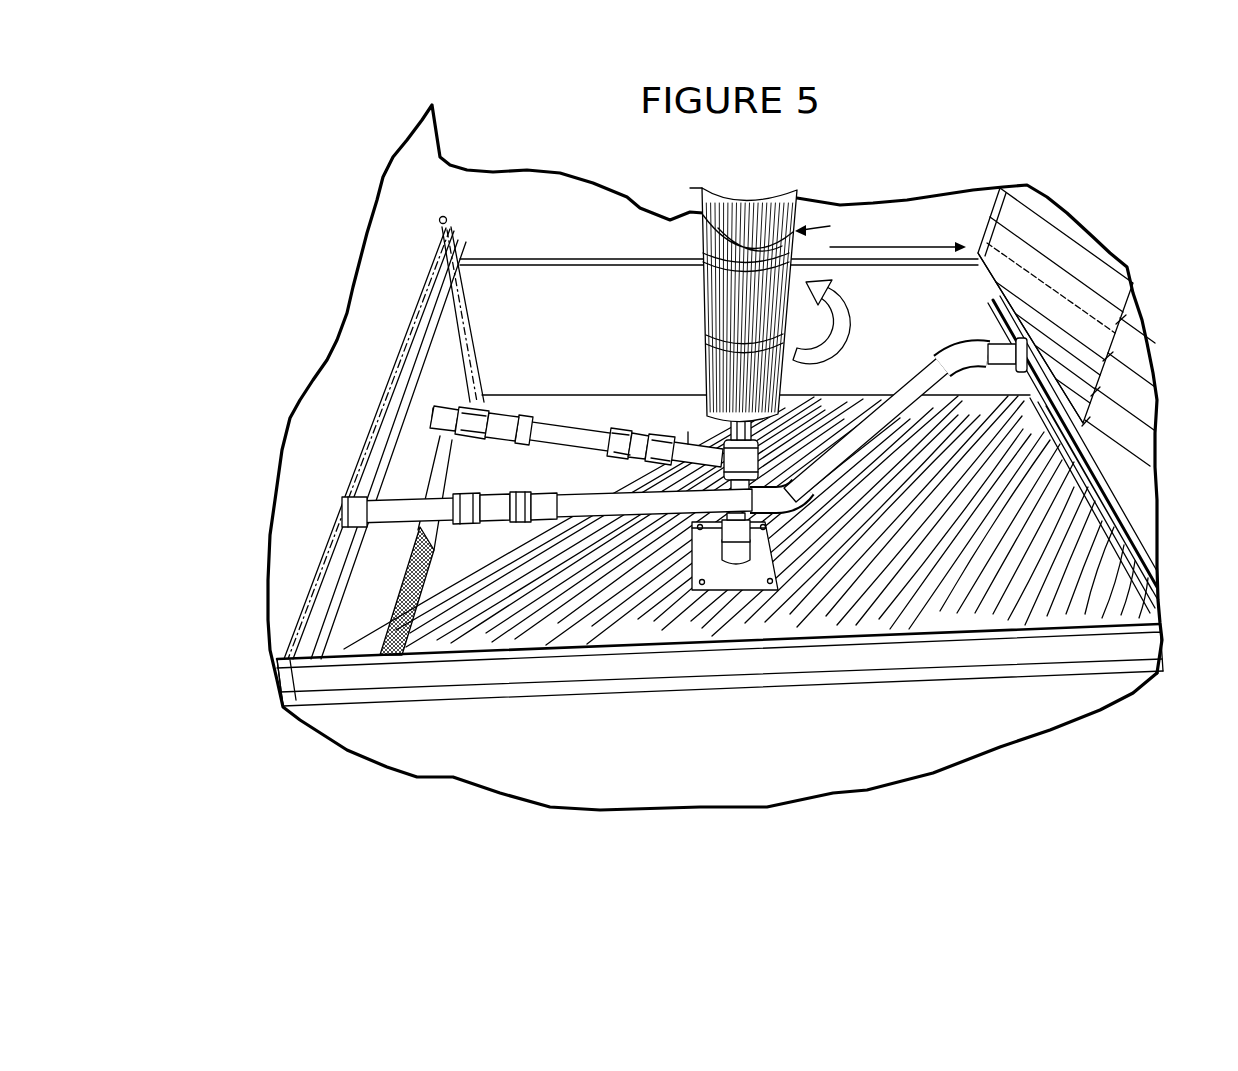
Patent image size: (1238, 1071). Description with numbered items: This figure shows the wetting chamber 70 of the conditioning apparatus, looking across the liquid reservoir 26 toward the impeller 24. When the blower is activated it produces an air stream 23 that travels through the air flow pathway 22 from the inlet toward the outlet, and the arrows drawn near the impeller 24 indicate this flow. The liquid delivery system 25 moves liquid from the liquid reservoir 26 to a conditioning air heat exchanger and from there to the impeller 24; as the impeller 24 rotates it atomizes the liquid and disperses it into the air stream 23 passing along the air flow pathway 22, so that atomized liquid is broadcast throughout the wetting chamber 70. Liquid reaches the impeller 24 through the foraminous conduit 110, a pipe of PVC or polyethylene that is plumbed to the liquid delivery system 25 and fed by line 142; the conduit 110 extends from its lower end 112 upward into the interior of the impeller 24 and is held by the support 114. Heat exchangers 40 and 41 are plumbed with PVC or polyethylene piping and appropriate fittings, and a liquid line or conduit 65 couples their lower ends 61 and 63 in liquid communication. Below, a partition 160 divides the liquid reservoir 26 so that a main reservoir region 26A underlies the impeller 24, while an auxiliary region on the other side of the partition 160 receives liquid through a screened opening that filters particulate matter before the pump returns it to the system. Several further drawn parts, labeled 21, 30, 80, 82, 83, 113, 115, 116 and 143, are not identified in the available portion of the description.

The sand box assembly 21 is at (944, 190).
The air flow pathway 22 is at (616, 244).
The air stream 23 is at (918, 246).
The impeller 24 is at (830, 228).
The liquid delivery system 25 is at (688, 430).
The liquid reservoir 26 is at (950, 607).
The main reservoir region 26A is at (1018, 610).
The housing 30 is at (867, 204).
The heat exchanger 40 is at (460, 264).
The heat exchanger 41 is at (1099, 252).
The lower end 61 is at (307, 630).
The lower end 63 is at (1155, 547).
The liquid line or conduit 65 is at (899, 374).
The wetting chamber 70 is at (614, 313).
The corrugated tube 80 is at (702, 300).
The rotation arrow 82 is at (805, 393).
The tube upper end 83 is at (712, 210).
The foraminous conduit 110 is at (700, 472).
The lower end 112 is at (757, 434).
The tee fitting 113 is at (758, 460).
The support 114 is at (756, 540).
The sleeve lower end 115 is at (770, 560).
The mounting plate 116 is at (780, 520).
The line 142 is at (456, 408).
The upper distribution pipe 143 is at (594, 412).
The partition 160 is at (414, 499).